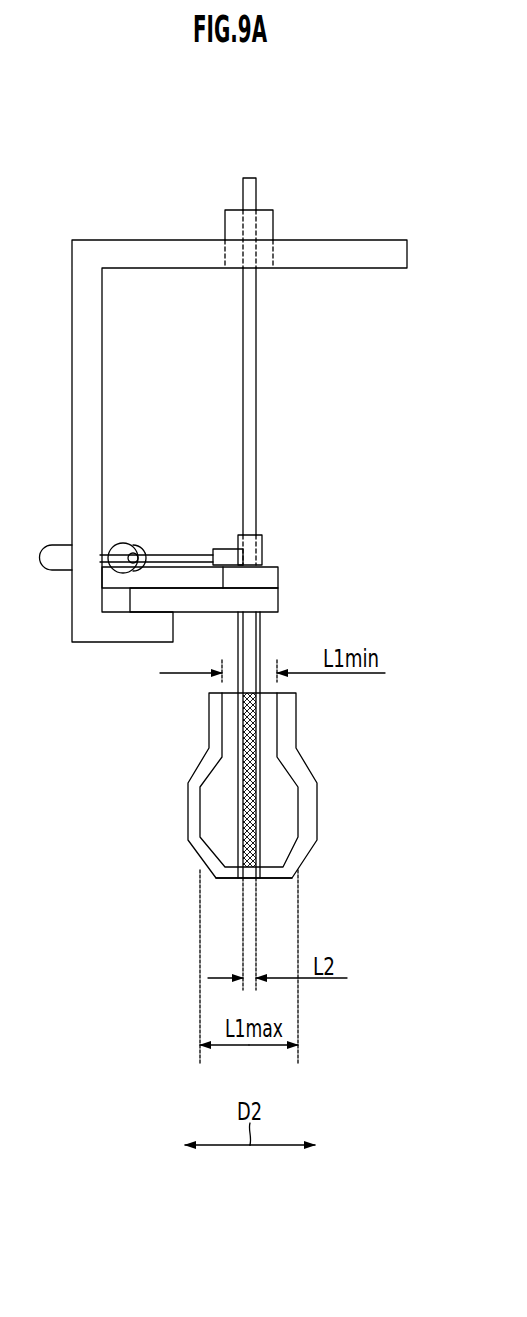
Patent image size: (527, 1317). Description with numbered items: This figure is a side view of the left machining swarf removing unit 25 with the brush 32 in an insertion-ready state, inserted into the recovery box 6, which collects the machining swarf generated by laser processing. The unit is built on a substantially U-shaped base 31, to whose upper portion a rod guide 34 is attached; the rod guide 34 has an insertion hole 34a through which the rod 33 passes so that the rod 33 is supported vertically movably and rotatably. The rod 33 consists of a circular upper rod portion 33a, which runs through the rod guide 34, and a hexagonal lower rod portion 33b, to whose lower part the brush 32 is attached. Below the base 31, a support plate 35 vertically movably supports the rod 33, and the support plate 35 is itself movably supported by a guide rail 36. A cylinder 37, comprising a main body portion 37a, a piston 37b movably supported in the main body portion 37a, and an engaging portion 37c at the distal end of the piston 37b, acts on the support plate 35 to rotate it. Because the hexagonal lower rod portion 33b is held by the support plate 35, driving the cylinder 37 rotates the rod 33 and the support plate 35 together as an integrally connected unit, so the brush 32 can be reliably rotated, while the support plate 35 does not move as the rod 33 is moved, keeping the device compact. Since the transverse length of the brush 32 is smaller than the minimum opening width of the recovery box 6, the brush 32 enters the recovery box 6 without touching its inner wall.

The left machining swarf removing unit 25 is at (222, 172).
The base 31 is at (373, 252).
The rod guide 34 is at (273, 227).
The insertion hole 34a is at (238, 220).
The rod 33 is at (263, 358).
The upper rod portion 33a is at (256, 190).
The lower rod portion 33b is at (262, 548).
The support plate 35 is at (278, 578).
The guide rail 36 is at (200, 612).
The cylinder 37 is at (53, 575).
The main body portion 37a is at (66, 546).
The piston 37b is at (165, 555).
The engaging portion 37c is at (222, 549).
The brush 32 is at (262, 765).
The recovery box 6 is at (272, 879).